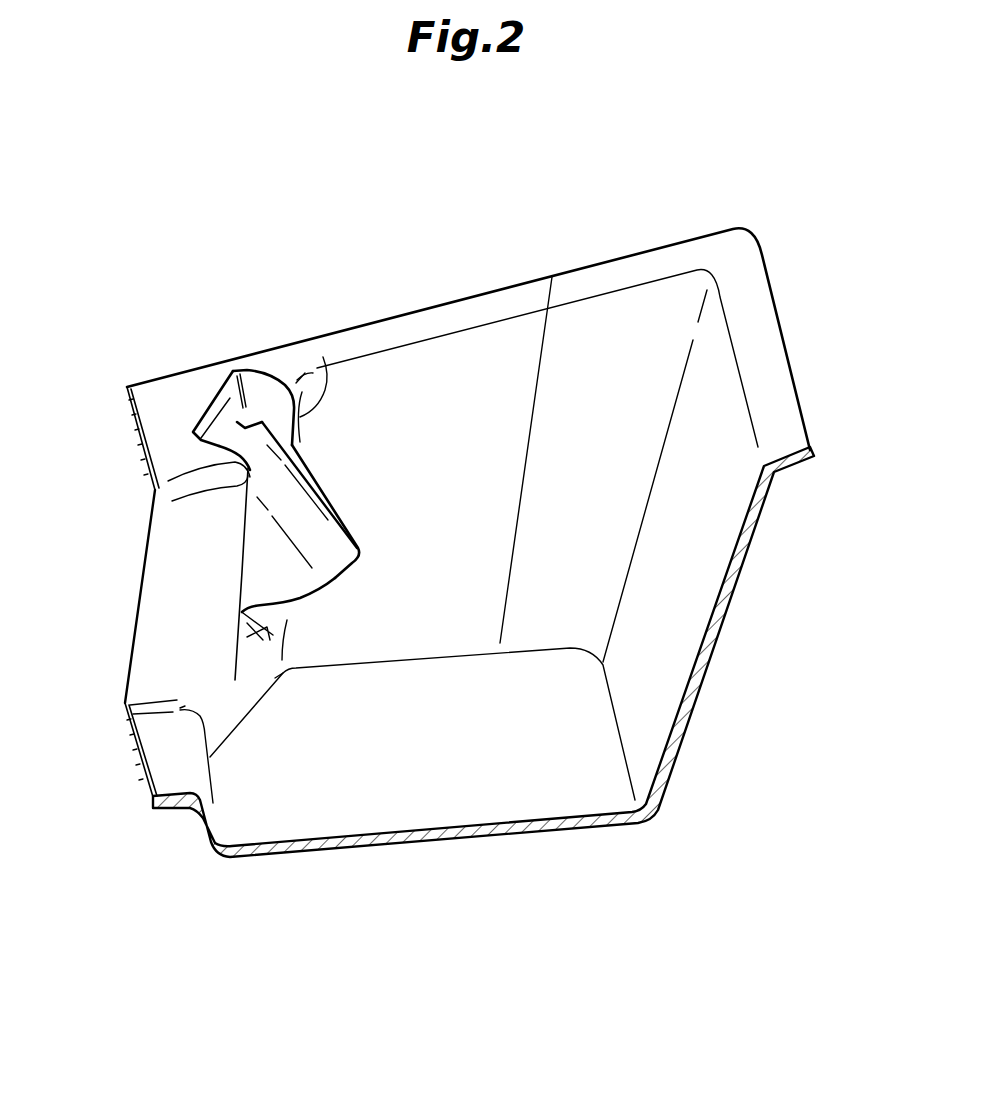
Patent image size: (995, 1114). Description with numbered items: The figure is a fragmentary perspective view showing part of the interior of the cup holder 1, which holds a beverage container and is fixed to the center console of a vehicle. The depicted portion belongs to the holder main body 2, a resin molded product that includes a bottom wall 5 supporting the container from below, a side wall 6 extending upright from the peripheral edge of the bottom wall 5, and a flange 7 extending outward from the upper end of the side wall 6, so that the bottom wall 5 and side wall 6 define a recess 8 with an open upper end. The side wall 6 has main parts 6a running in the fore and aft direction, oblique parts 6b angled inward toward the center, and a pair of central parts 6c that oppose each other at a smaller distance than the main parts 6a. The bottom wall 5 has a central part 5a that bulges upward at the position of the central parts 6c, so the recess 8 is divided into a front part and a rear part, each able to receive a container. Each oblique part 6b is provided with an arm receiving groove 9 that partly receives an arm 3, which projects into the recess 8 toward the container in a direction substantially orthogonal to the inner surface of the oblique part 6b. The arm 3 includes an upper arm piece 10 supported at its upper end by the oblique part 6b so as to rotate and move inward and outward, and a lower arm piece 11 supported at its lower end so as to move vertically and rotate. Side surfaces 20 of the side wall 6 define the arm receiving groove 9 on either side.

The cup holder 1 is at (733, 159).
The holder main body 2 is at (641, 253).
The arm 3 is at (340, 497).
The bottom wall 5 is at (483, 785).
The central part of the bottom wall 5a is at (154, 748).
The side wall 6 is at (740, 588).
The main part of the side wall 6a is at (578, 333).
The oblique part of the side wall 6b is at (319, 411).
The central part of the side wall 6c is at (156, 568).
The flange 7 is at (772, 372).
The recess 8 is at (681, 617).
The arm receiving groove 9 is at (262, 391).
The upper arm piece 10 is at (300, 494).
The lower arm piece 11 is at (262, 631).
The side surface 20 is at (242, 403).